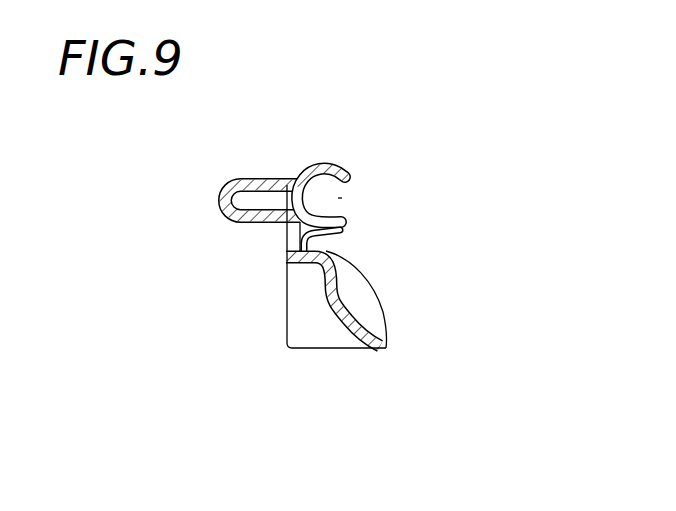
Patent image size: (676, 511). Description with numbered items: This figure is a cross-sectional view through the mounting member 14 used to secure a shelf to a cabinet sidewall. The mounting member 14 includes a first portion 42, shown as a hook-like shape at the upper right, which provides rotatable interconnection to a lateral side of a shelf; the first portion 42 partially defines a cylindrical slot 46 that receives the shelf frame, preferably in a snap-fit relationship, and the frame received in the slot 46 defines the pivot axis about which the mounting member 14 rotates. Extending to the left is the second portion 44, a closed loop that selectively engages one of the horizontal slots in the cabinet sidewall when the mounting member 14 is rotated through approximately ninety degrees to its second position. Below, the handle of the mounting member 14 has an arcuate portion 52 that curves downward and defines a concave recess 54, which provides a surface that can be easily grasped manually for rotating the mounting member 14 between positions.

The mounting member 14 is at (393, 174).
The first portion 42 is at (343, 167).
The second portion 44 is at (211, 172).
The cylindrical slot 46 is at (338, 198).
The arcuate portion 52 is at (323, 332).
The concave recess 54 is at (357, 302).